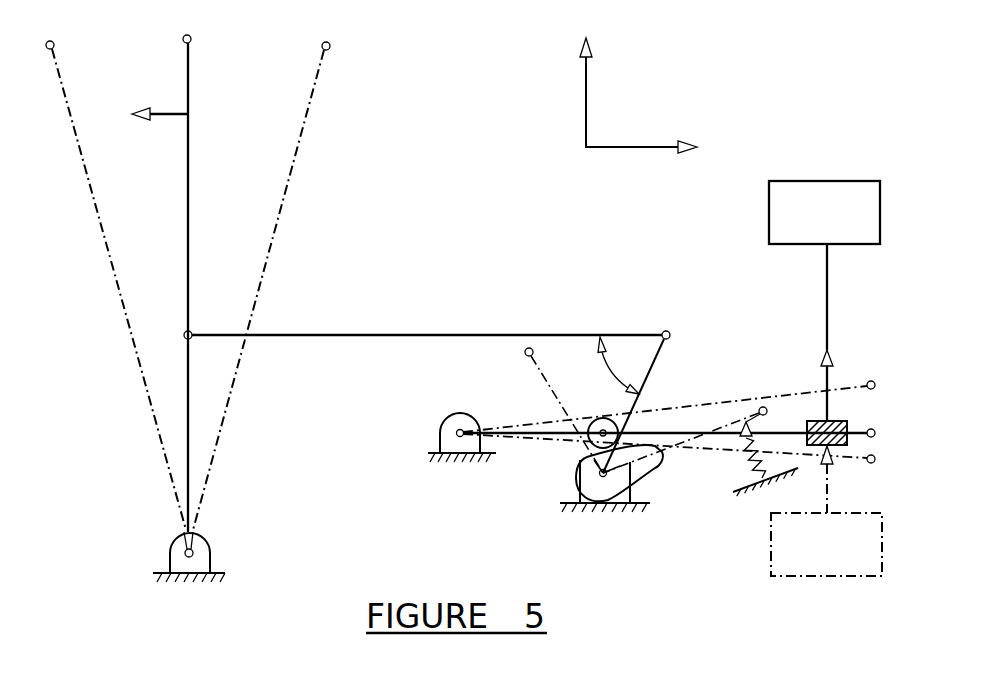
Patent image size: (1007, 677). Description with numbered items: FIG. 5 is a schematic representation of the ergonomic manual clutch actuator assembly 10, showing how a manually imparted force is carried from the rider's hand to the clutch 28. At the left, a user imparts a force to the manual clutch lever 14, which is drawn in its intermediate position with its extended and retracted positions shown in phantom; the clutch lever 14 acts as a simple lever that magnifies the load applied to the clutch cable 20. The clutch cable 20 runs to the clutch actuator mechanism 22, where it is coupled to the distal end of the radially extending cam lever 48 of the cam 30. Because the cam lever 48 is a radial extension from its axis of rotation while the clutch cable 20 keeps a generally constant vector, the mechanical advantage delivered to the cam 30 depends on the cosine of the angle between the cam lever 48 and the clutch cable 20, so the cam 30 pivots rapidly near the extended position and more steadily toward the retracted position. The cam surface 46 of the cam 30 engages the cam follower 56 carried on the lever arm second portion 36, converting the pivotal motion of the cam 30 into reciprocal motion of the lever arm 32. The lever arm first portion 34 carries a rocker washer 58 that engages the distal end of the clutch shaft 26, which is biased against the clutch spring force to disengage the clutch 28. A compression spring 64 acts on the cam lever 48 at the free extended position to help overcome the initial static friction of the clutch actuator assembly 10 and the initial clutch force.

The clutch actuator assembly 10 is at (463, 132).
The clutch lever 14 is at (188, 162).
The clutch cable 20 is at (383, 335).
The clutch actuator mechanism 22 is at (652, 283).
The clutch shaft 26 is at (828, 312).
The clutch 28 is at (822, 181).
The cam 30 is at (573, 452).
The lever arm 32 is at (855, 428).
The lever arm first portion 34 is at (905, 434).
The lever arm second portion 36 is at (541, 410).
The cam surface 46 is at (648, 478).
The cam lever 48 is at (657, 358).
The cam follower 56 is at (590, 416).
The rocker washer 58 is at (822, 420).
The compression spring 64 is at (752, 462).